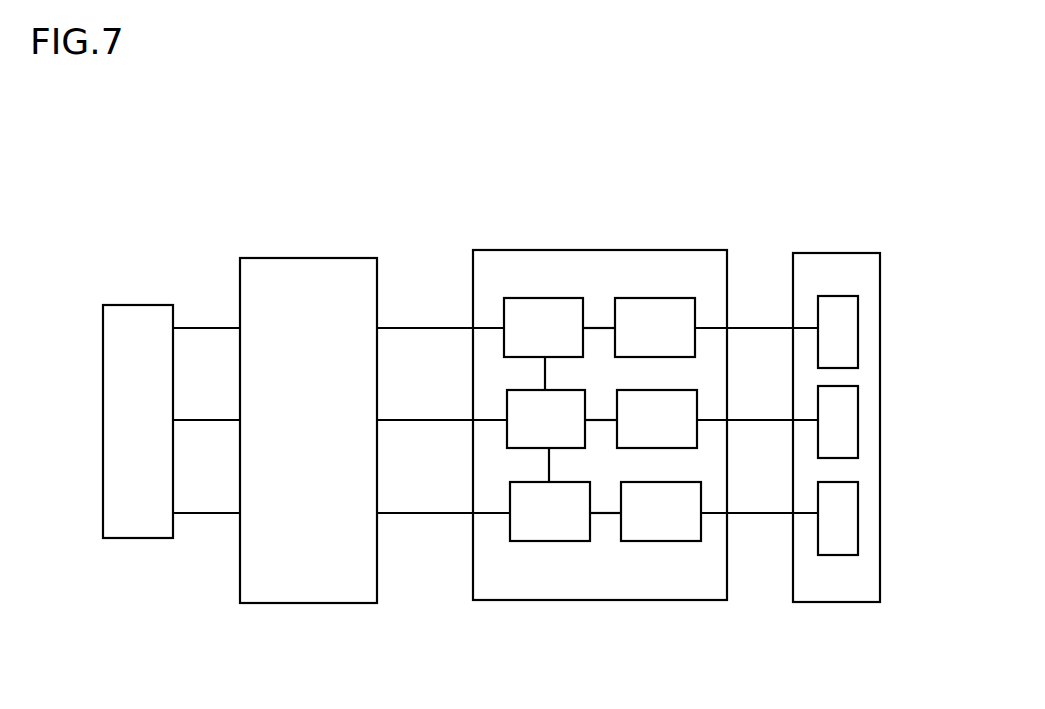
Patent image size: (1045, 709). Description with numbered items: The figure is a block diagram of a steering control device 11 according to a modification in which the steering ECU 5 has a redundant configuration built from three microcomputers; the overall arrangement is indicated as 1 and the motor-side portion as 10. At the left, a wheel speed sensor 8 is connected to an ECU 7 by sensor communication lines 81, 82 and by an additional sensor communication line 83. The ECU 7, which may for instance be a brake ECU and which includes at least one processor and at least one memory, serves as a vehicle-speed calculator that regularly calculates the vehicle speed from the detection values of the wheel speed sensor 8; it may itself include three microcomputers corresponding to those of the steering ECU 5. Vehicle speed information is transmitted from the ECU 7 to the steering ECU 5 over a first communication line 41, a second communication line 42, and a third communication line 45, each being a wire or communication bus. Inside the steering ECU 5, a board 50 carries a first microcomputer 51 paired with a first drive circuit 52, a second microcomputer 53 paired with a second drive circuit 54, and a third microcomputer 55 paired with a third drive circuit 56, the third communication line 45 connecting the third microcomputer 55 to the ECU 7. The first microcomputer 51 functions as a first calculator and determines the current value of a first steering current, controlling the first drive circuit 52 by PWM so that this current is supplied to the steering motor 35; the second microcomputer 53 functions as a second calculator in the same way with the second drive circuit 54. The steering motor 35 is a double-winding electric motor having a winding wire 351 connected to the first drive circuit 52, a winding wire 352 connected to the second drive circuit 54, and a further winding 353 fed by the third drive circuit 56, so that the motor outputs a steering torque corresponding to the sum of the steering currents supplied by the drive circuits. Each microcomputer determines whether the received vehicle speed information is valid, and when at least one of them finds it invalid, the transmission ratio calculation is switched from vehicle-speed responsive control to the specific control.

The sensor system 1 is at (120, 145).
The output unit 10 is at (788, 166).
The steering control device 11 is at (416, 146).
The steering ECU 5 is at (508, 249).
The board 50 is at (700, 265).
The first microcomputer 51 is at (546, 297).
The first drive circuit 52 is at (660, 307).
The second microcomputer 53 is at (508, 445).
The second drive circuit 54 is at (688, 450).
The third microcomputer 55 is at (540, 540).
The third drive circuit 56 is at (672, 540).
The ECU 7 is at (283, 262).
The wheel speed sensor 8 is at (102, 330).
The sensor communication line 81 is at (203, 325).
The sensor communication line 82 is at (210, 418).
The sensor communication line 83 is at (212, 515).
The first communication line 41 is at (423, 326).
The second communication line 42 is at (438, 419).
The third communication line 45 is at (425, 512).
The steering motor 35 is at (822, 252).
The winding wire 351 is at (845, 330).
The winding wire 352 is at (845, 425).
The third indicator 353 is at (853, 520).